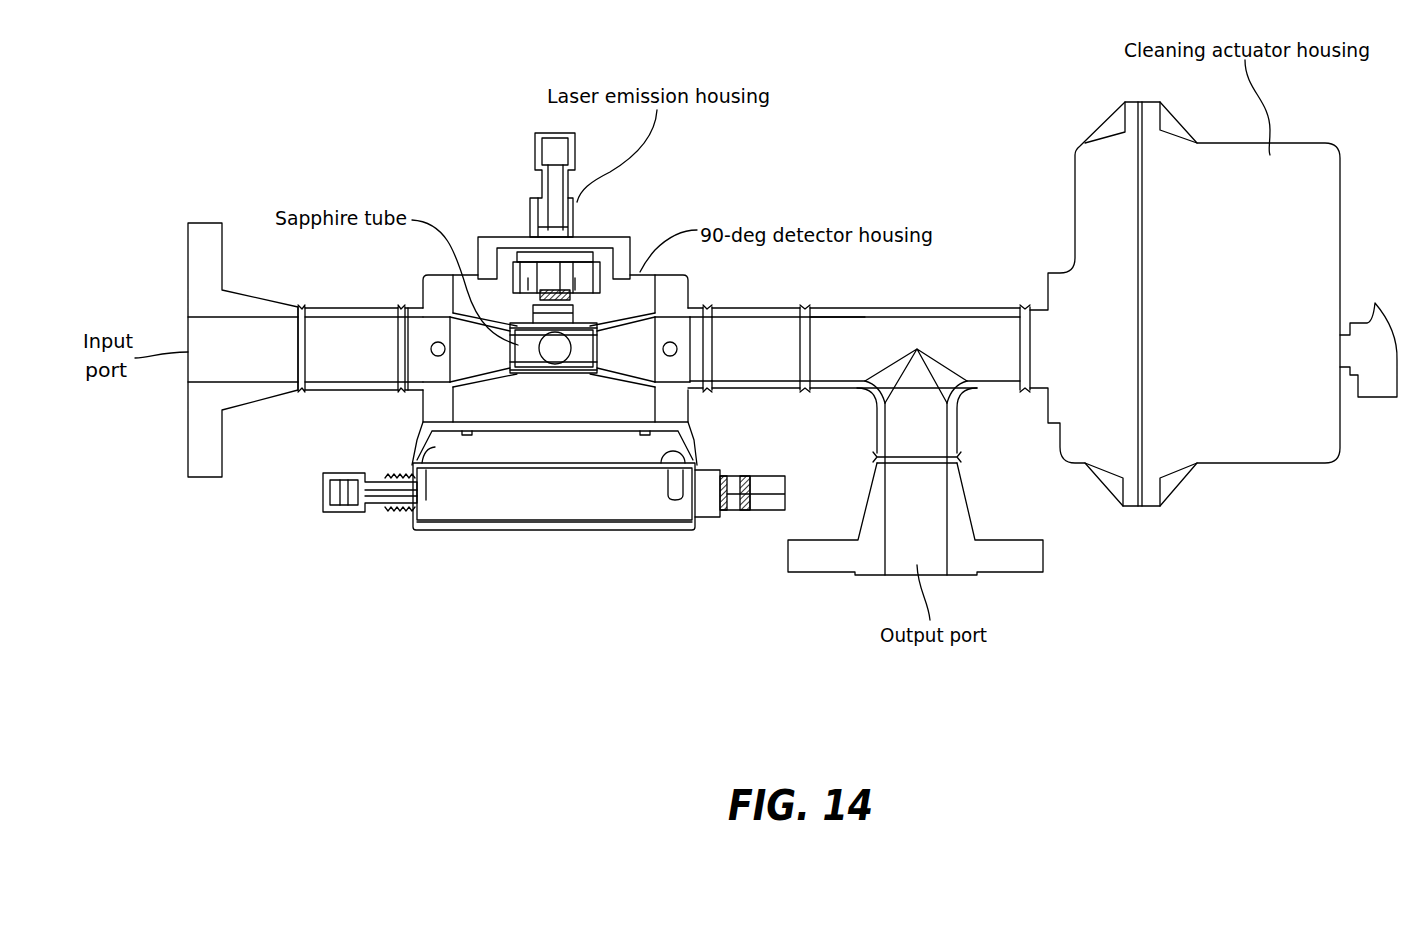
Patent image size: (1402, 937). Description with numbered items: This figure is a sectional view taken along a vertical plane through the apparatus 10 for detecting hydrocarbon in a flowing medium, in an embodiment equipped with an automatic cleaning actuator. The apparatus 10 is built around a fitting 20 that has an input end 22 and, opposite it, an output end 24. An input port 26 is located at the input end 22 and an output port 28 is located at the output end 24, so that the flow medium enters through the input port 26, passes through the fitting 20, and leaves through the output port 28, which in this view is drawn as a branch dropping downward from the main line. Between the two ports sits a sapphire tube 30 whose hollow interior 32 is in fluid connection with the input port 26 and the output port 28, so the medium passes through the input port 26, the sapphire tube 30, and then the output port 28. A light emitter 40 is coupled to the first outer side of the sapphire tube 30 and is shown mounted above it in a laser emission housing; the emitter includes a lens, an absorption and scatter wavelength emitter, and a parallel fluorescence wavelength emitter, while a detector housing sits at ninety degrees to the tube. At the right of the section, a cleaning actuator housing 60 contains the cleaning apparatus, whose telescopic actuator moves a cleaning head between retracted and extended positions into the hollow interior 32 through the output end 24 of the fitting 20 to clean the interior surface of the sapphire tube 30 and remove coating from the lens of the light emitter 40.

The apparatus 10 is at (630, 243).
The fitting 20 is at (430, 288).
The input end 22 is at (327, 307).
The output end 24 is at (737, 330).
The input port 26 is at (188, 327).
The output port 28 is at (887, 577).
The sapphire tube 30 is at (527, 357).
The hollow interior 32 is at (558, 350).
The light emitter 40 is at (538, 263).
The cleaning actuator housing 60 is at (1092, 192).